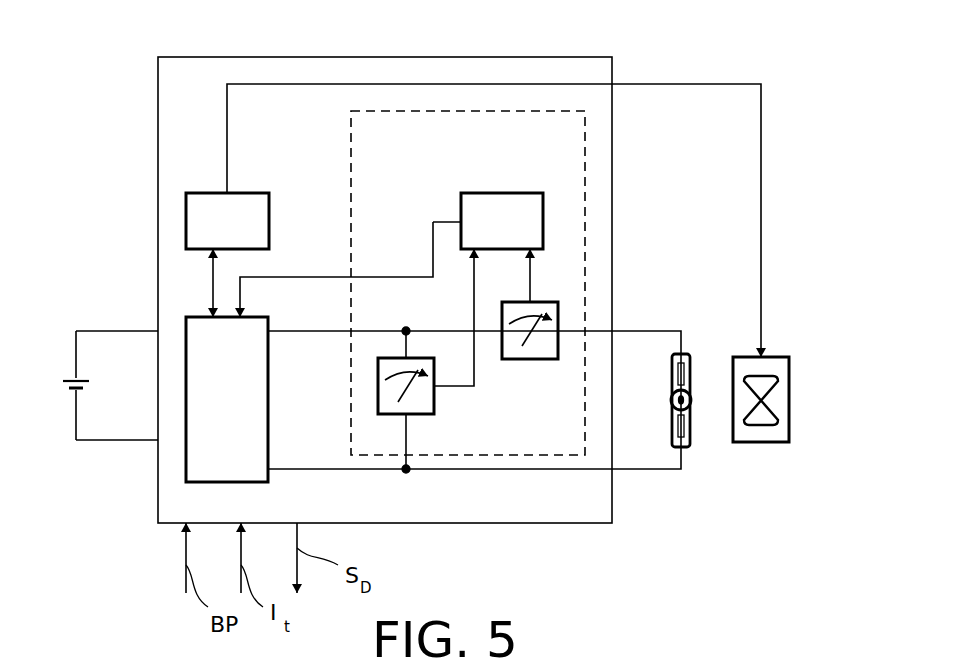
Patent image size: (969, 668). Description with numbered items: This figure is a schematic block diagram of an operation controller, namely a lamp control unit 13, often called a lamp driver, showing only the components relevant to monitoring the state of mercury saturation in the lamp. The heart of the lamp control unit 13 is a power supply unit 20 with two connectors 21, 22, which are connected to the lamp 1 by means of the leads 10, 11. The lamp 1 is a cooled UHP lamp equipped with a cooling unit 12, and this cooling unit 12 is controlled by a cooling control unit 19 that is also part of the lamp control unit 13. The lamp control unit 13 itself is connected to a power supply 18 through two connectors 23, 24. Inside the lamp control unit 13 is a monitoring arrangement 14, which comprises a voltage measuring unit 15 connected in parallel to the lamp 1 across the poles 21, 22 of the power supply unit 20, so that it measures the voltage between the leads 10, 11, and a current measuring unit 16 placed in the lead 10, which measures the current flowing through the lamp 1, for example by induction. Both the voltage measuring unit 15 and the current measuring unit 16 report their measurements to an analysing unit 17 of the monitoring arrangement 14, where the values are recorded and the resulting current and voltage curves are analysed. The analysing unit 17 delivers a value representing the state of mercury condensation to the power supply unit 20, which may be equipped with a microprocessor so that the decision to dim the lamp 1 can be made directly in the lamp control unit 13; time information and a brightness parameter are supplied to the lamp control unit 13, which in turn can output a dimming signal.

The lamp 1 is at (692, 395).
The lead 10 is at (640, 331).
The lead 11 is at (645, 469).
The cooling unit 12 is at (780, 395).
The lamp control unit 13 is at (207, 56).
The monitoring arrangement 14 is at (413, 125).
The voltage measuring unit 15 is at (422, 402).
The current measuring unit 16 is at (530, 350).
The analysing unit 17 is at (486, 203).
The power supply 18 is at (70, 378).
The cooling control unit 19 is at (210, 204).
The power supply unit 20 is at (210, 327).
The connector 21 is at (270, 333).
The connector 22 is at (275, 460).
The connector 23 is at (157, 330).
The connector 24 is at (157, 442).